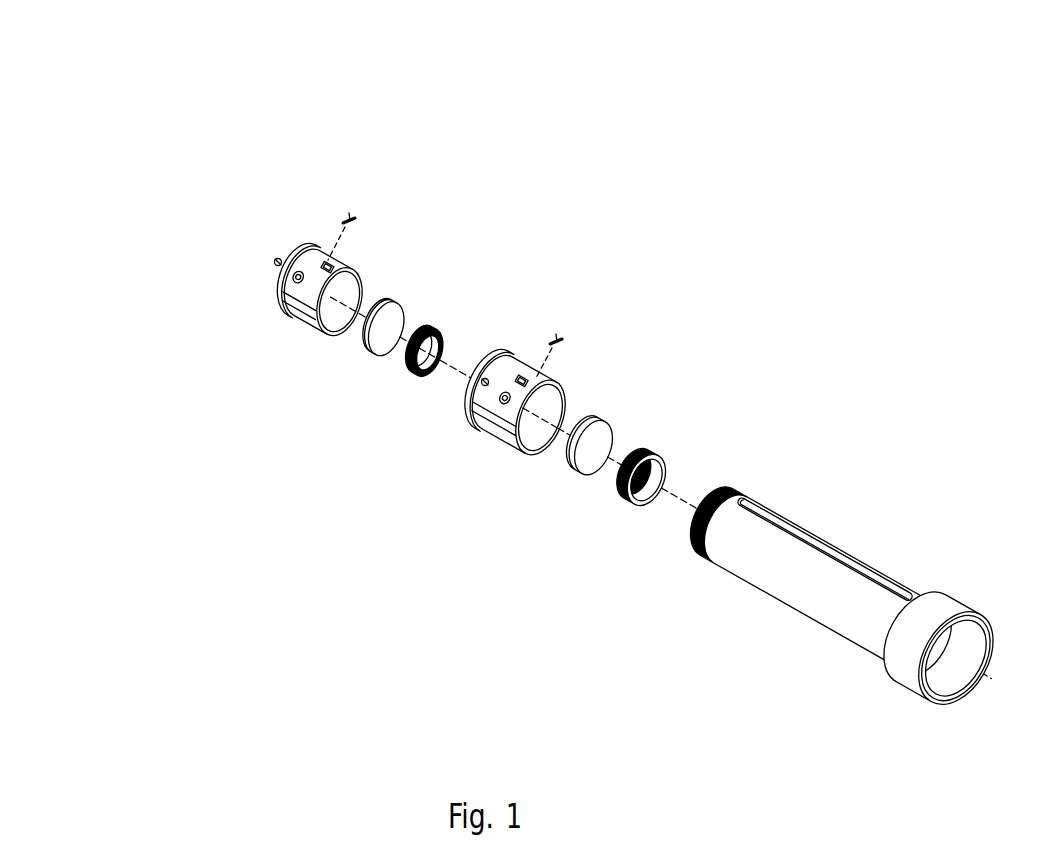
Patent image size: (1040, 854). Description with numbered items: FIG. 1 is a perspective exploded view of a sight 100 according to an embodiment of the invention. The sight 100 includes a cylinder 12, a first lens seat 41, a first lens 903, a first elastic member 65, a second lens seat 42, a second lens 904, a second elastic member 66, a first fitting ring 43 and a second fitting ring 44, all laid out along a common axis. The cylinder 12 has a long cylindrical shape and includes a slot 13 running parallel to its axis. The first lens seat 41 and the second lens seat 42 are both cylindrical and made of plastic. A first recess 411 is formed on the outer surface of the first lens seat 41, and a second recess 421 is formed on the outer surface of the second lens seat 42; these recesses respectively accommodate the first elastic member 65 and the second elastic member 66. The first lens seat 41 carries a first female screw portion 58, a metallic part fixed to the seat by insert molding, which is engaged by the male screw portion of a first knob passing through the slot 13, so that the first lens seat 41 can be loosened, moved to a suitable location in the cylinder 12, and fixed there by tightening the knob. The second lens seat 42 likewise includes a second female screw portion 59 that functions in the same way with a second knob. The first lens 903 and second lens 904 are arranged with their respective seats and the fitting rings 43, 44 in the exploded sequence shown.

The sight 100 is at (92, 65).
The cylinder 12 is at (828, 632).
The slot 13 is at (812, 549).
The first lens seat 41 is at (298, 318).
The first recess 411 is at (287, 291).
The second lens seat 42 is at (500, 438).
The second recess 421 is at (492, 416).
The first fitting ring 43 is at (412, 381).
The second fitting ring 44 is at (628, 506).
The first female screw portion 58 is at (355, 274).
The second female screw portion 59 is at (548, 391).
The first elastic member 65 is at (279, 258).
The second elastic member 66 is at (486, 378).
The first lens 903 is at (368, 346).
The second lens 904 is at (577, 449).